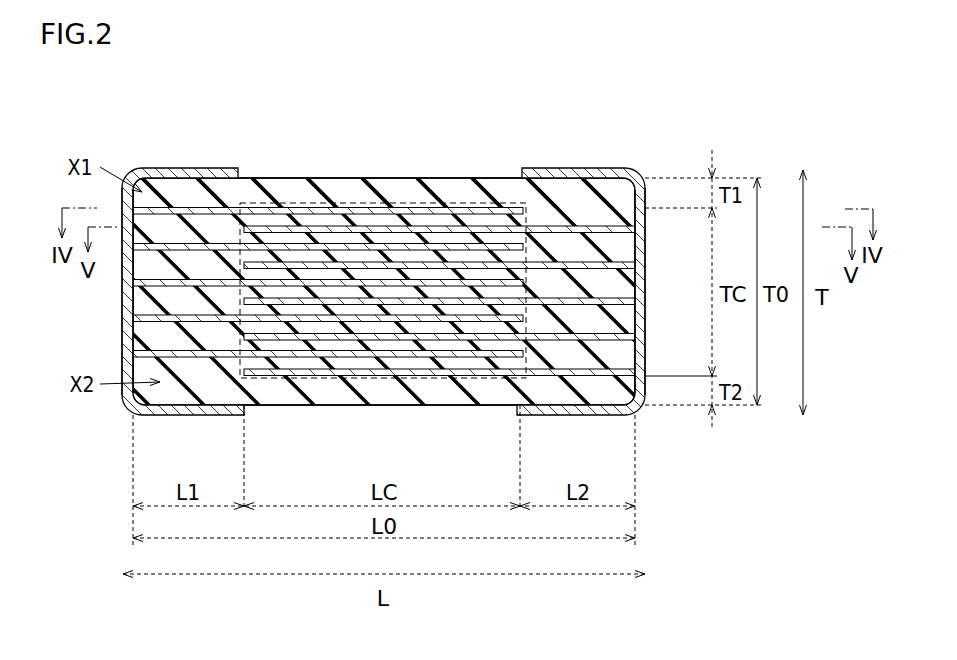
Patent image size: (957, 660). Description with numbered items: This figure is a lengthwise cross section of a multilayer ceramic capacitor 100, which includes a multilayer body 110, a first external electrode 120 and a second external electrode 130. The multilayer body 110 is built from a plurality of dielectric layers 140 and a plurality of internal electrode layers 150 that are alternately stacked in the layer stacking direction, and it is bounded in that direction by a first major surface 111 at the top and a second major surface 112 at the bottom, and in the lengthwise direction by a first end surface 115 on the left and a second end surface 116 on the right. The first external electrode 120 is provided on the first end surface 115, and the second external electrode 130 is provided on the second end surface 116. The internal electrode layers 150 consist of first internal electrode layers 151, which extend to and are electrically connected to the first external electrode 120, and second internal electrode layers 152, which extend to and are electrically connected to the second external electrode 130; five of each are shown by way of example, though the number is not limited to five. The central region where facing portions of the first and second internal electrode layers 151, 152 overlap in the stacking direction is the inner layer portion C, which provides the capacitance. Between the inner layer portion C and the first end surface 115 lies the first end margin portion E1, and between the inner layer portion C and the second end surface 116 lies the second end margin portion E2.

The multilayer ceramic capacitor 100 is at (620, 126).
The multilayer body 110 is at (335, 82).
The first major surface 111 is at (498, 167).
The second major surface 112 is at (370, 412).
The first end surface 115 is at (130, 204).
The second end surface 116 is at (636, 201).
The first external electrode 120 is at (130, 318).
The second external electrode 130 is at (640, 312).
The dielectric layers 140 is at (353, 192).
The internal electrode layers 150 is at (384, 228).
The first internal electrode layers 151 is at (407, 212).
The second internal electrode layers 152 is at (453, 230).
The first end margin portion E1 is at (152, 264).
The second end margin portion E2 is at (611, 264).
The inner layer portion C is at (296, 200).